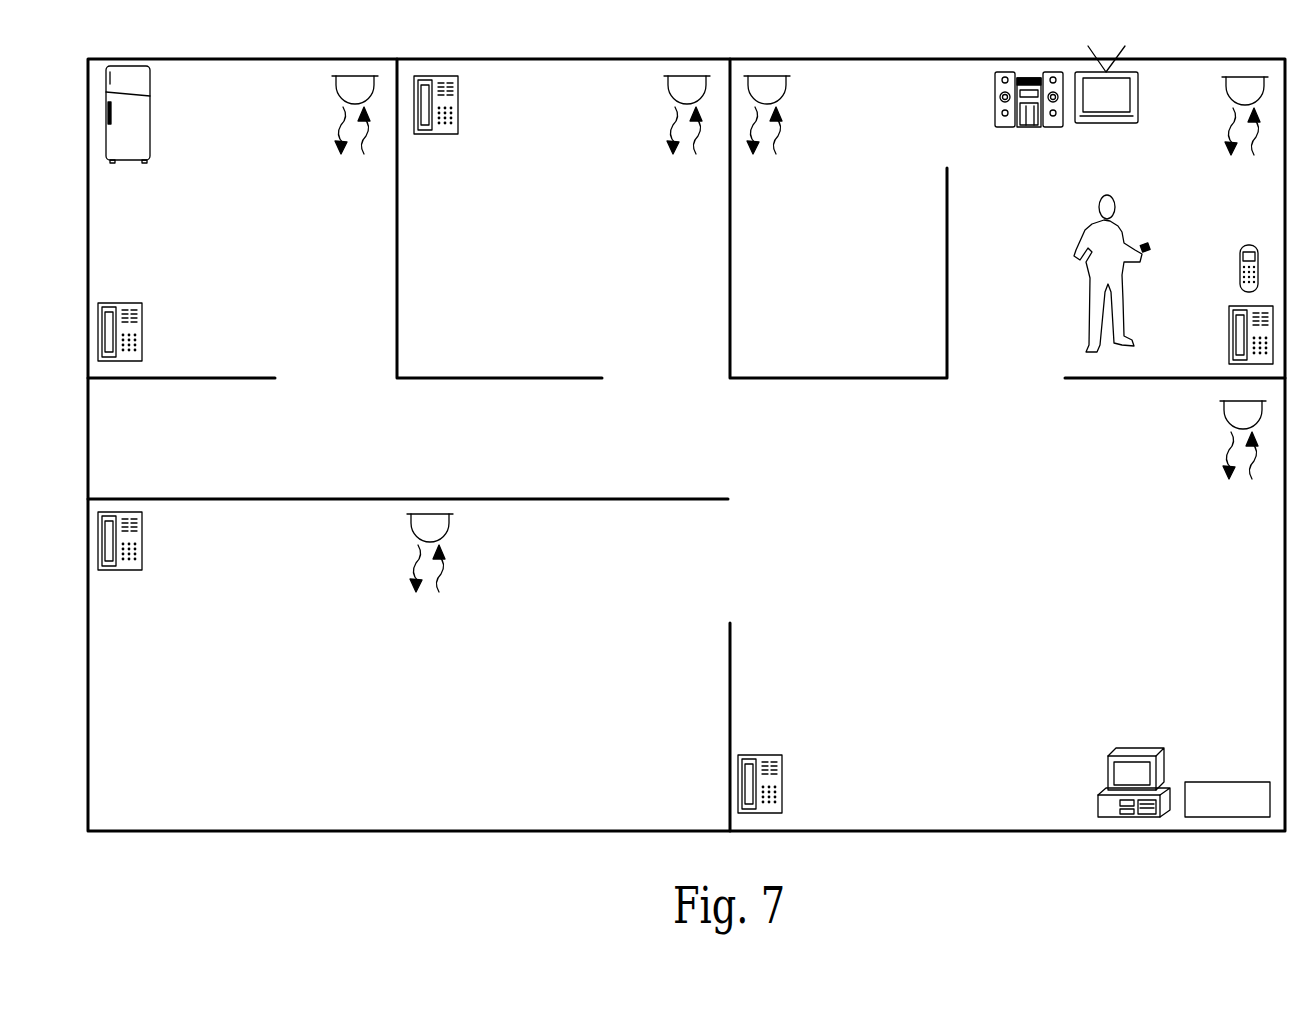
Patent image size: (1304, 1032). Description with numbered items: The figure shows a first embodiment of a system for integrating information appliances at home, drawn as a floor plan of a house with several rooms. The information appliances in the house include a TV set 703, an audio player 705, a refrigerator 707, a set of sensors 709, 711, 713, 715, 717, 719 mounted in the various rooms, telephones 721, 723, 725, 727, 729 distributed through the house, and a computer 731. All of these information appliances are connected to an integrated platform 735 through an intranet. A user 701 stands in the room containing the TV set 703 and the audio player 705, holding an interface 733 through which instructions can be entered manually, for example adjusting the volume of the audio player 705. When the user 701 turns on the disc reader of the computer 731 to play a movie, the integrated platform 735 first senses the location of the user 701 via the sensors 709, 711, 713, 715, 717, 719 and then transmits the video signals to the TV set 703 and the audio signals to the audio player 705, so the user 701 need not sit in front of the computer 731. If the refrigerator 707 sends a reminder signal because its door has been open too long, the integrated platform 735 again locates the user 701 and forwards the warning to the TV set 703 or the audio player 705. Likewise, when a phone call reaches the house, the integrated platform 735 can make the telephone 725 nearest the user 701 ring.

The user 701 is at (1079, 267).
The TV set 703 is at (1106, 124).
The audio player 705 is at (995, 103).
The refrigerator 707 is at (131, 162).
The sensor 709 is at (340, 81).
The sensor 711 is at (666, 81).
The sensor 713 is at (787, 83).
The sensor 715 is at (1228, 84).
The sensor 717 is at (451, 522).
The sensor 719 is at (1224, 406).
The telephone 721 is at (143, 326).
The telephone 723 is at (437, 135).
The telephone 725 is at (1228, 335).
The telephone 727 is at (143, 541).
The telephone 729 is at (783, 786).
The computer 731 is at (1141, 750).
The interface 733 is at (1248, 245).
The integrated platform 735 is at (1234, 782).